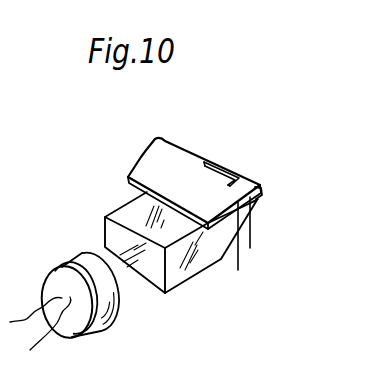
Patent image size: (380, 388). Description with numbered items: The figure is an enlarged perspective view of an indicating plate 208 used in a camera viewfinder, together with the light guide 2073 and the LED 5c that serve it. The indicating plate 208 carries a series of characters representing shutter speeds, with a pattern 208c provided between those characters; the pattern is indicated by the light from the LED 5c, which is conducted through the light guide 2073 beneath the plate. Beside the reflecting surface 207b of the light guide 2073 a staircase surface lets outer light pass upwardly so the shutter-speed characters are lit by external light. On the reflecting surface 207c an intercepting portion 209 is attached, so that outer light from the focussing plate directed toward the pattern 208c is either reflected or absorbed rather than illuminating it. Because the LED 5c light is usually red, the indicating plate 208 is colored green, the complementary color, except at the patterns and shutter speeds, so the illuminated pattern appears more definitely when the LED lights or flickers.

The indicating plate 208 is at (164, 147).
The pattern 208c is at (233, 168).
The intercepting portion 209 is at (262, 191).
The reflecting surface 207b is at (262, 198).
The reflecting surface 207c is at (238, 231).
The light guide 2073 is at (208, 253).
The LED 5c is at (92, 331).